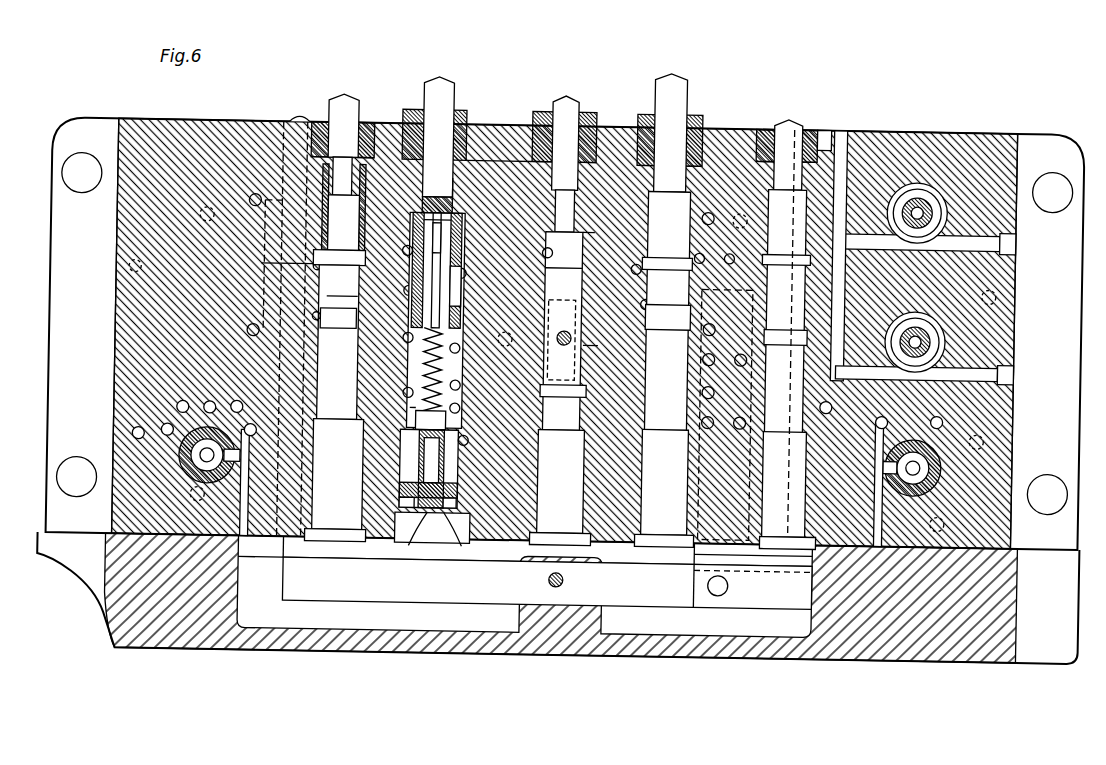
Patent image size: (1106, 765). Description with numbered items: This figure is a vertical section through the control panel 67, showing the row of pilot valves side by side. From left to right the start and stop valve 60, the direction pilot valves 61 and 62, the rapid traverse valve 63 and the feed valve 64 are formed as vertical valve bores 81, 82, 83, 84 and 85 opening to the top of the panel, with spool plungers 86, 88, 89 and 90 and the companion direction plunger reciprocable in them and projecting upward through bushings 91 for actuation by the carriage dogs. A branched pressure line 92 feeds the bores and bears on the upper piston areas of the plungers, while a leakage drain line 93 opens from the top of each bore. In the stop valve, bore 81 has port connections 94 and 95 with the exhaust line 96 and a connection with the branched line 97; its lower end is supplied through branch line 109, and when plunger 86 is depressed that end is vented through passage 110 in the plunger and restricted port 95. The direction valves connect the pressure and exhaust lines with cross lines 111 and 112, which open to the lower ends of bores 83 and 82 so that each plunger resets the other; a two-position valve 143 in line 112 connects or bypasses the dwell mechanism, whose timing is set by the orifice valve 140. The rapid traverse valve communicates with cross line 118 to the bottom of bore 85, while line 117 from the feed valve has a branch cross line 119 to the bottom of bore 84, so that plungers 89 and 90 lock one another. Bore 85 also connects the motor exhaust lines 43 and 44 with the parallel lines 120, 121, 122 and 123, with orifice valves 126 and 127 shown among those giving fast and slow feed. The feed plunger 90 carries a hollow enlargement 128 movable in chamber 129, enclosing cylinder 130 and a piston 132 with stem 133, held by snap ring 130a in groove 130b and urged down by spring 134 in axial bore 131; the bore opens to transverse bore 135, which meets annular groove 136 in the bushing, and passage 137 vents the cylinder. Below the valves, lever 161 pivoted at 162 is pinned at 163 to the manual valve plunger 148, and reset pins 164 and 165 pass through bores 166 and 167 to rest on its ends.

The panel 67 is at (108, 118).
The reset pin 164 is at (295, 118).
The valve bore 82 is at (339, 96).
The pilot valve 61 is at (366, 126).
The feed plunger 90 is at (440, 80).
The feed valve 64 is at (460, 120).
The stop plunger 86 is at (562, 96).
The start and stop valve 60 is at (598, 118).
The rapid traverse plunger 89 is at (666, 72).
The rapid traverse valve 63 is at (700, 96).
The pilot valve 62 is at (766, 126).
The plunger 88 is at (793, 118).
The reset pin 165 is at (822, 128).
The bore 166 is at (276, 328).
The bushing 91 is at (564, 154).
The bore 167 is at (845, 158).
The orifice valve 126 is at (944, 200).
The valve bore 85 is at (452, 192).
The annular groove 136 is at (452, 206).
The transverse bore 135 is at (456, 220).
The valve bore 81 is at (538, 226).
The valve bore 84 is at (724, 208).
The leakage drain line 93 is at (456, 235).
The pressure line 92 is at (563, 246).
The line 117 is at (479, 264).
The branched line 97 is at (542, 273).
The cross line 111 is at (273, 264).
The cross line 118 is at (549, 352).
The valve bore 83 is at (760, 268).
The cross line 112 is at (850, 276).
The exhaust line 96 is at (585, 297).
The axial bore 131 is at (458, 293).
The port connection 94 is at (582, 290).
The parallel line 122 is at (391, 330).
The exhaust line 44 is at (456, 369).
The restricted port connection 95 is at (574, 338).
The branch cross line 119 is at (630, 317).
The passage 110 is at (606, 341).
The orifice valve 127 is at (944, 336).
The branch line 109 is at (509, 352).
The parallel line 123 is at (390, 392).
The parallel line 120 is at (475, 386).
The parallel line 121 is at (475, 405).
The exhaust line 43 is at (394, 403).
The coil compression spring 134 is at (417, 420).
The passage 137 is at (412, 445).
The orifice valve 140 is at (182, 471).
The cylinder 130 is at (450, 470).
The hollow enlargement 128 is at (455, 492).
The chamber 129 is at (458, 508).
The piston 132 is at (408, 478).
The axial stem 133 is at (410, 498).
The two-position valve 143 is at (936, 484).
The snap ring 130a is at (469, 536).
The groove 130b is at (401, 535).
The valve plunger 148 is at (731, 557).
The lever 161 is at (380, 608).
The pivot 162 is at (559, 588).
The pivotal connection 163 is at (718, 594).